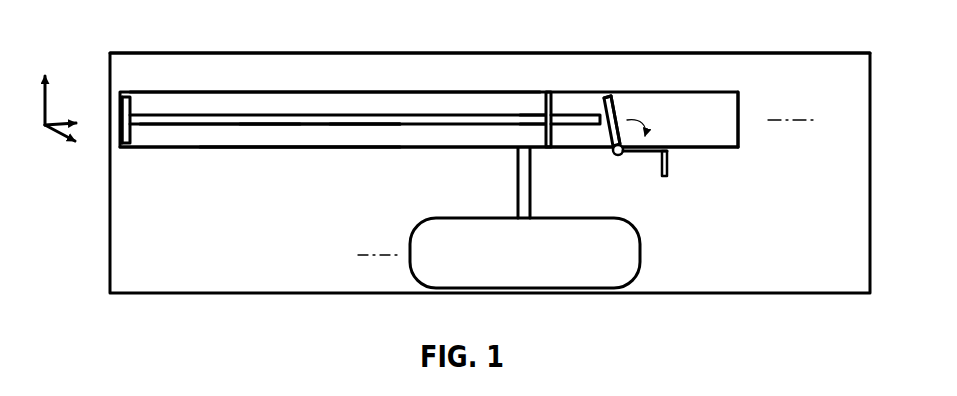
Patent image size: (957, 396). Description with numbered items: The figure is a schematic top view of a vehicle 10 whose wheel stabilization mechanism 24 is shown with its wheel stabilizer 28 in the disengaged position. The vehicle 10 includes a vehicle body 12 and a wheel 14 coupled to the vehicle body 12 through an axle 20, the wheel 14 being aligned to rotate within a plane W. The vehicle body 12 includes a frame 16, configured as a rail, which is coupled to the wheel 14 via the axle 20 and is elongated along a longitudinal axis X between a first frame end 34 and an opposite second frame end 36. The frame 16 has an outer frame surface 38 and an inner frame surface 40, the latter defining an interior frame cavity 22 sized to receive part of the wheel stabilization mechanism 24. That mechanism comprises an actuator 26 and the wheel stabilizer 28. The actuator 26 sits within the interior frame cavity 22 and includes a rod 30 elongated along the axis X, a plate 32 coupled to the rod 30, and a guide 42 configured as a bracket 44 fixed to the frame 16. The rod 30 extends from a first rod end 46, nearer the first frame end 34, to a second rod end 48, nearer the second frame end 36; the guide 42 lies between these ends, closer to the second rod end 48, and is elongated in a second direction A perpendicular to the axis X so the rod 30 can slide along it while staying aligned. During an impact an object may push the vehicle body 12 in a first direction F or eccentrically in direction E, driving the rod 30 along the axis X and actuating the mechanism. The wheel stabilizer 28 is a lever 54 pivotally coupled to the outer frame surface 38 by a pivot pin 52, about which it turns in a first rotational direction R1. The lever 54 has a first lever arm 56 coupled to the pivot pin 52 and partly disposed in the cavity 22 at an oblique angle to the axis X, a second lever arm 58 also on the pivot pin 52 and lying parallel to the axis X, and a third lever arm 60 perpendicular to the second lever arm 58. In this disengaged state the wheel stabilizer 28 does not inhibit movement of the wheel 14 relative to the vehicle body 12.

The vehicle 10 is at (735, 50).
The vehicle body 12 is at (215, 52).
The wheel 14 is at (408, 225).
The frame 16 is at (715, 149).
The axle 20 is at (517, 183).
The interior frame cavity 22 is at (324, 90).
The wheel stabilization mechanism 24 is at (184, 129).
The actuator 26 is at (270, 127).
The wheel stabilizer 28 is at (622, 117).
The rod 30 is at (360, 127).
The plate 32 is at (125, 145).
The first frame end 34 is at (121, 118).
The second frame end 36 is at (739, 120).
The outer frame surface 38 is at (281, 149).
The inner frame surface 40 is at (256, 94).
The guide 42 is at (547, 91).
The bracket 44 is at (533, 117).
The first rod end 46 is at (132, 118).
The second rod end 48 is at (597, 117).
The pivot pin 52 is at (612, 153).
The lever 54 is at (612, 100).
The first lever arm 56 is at (609, 96).
The second lever arm 58 is at (643, 157).
The third lever arm 60 is at (664, 177).
The first rotational direction R1 is at (649, 120).
The longitudinal axis X is at (798, 120).
The plane W is at (357, 256).
The second direction A is at (46, 104).
The first direction F is at (62, 123).
The eccentric direction E is at (69, 140).